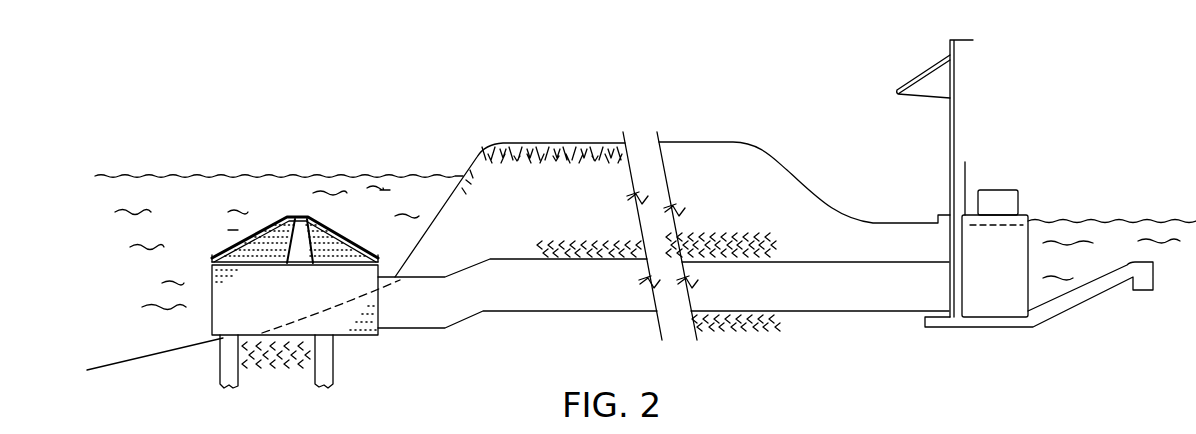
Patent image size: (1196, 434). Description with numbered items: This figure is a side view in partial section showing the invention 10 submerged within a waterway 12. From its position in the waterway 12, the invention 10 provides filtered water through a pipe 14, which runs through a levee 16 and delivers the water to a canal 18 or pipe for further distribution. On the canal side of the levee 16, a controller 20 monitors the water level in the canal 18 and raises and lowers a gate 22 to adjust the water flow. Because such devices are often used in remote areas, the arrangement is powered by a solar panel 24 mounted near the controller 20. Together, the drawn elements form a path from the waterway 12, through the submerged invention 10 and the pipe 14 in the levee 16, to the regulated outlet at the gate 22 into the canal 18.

The invention 10 is at (343, 213).
The waterway 12 is at (275, 272).
The pipe 14 is at (552, 313).
The levee 16 is at (705, 158).
The canal 18 is at (1105, 240).
The controller 20 is at (993, 190).
The gate 22 is at (1030, 287).
The solar panel 24 is at (917, 73).